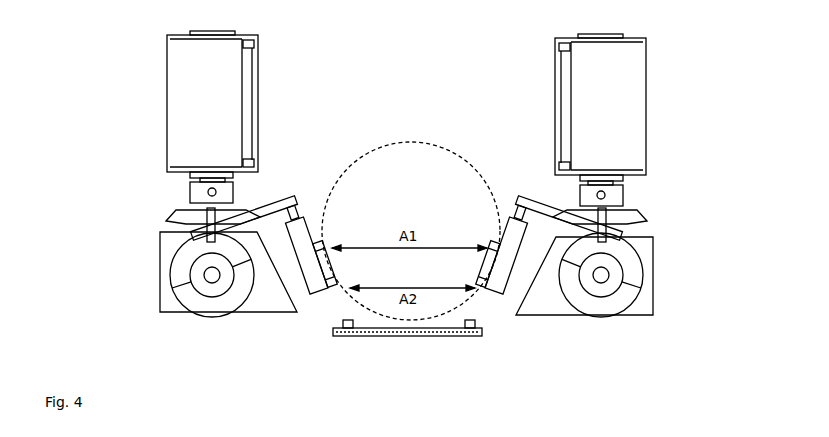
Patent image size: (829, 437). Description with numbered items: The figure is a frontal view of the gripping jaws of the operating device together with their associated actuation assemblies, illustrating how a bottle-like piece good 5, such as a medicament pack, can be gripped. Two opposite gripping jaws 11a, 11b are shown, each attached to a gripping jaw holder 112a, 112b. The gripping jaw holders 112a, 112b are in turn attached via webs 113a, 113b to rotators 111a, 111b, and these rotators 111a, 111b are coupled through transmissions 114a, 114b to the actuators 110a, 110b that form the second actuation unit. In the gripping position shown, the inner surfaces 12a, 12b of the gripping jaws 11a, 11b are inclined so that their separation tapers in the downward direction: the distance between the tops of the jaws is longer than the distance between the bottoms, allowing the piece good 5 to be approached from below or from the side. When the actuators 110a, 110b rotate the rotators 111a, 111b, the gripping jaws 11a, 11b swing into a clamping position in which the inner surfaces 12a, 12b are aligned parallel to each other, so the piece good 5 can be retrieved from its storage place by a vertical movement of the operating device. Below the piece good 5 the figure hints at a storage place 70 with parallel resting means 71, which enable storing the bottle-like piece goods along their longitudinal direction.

The bottle-like piece good 5 is at (418, 143).
The gripping jaw 11a is at (327, 288).
The gripping jaw 11b is at (493, 292).
The inner surface 12a is at (264, 290).
The inner surface 12b is at (569, 283).
The storage place 70 is at (400, 342).
The resting means 71 is at (352, 335).
The actuator 110a is at (208, 108).
The actuator 110b is at (603, 108).
The rotator 111a is at (190, 272).
The rotator 111b is at (630, 270).
The gripping jaw holder 112a is at (303, 243).
The gripping jaw holder 112b is at (510, 233).
The web 113a is at (190, 188).
The web 113b is at (626, 206).
The transmission 114a is at (176, 214).
The transmission 114b is at (640, 226).